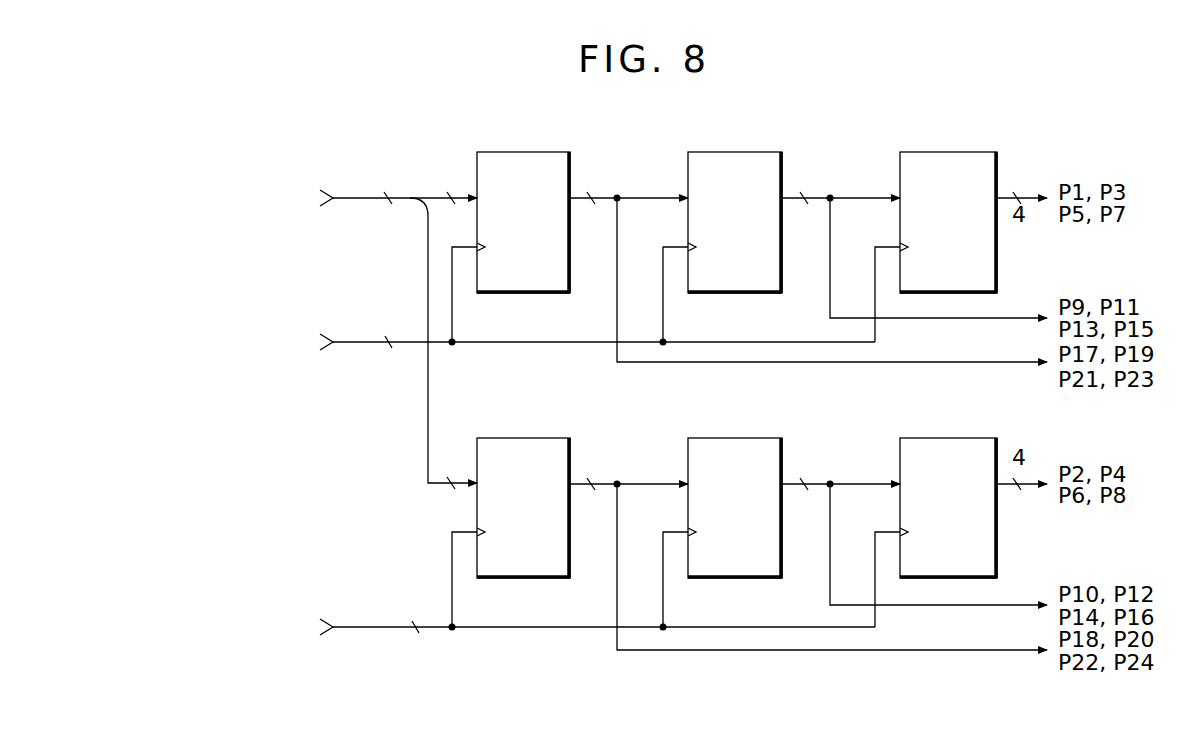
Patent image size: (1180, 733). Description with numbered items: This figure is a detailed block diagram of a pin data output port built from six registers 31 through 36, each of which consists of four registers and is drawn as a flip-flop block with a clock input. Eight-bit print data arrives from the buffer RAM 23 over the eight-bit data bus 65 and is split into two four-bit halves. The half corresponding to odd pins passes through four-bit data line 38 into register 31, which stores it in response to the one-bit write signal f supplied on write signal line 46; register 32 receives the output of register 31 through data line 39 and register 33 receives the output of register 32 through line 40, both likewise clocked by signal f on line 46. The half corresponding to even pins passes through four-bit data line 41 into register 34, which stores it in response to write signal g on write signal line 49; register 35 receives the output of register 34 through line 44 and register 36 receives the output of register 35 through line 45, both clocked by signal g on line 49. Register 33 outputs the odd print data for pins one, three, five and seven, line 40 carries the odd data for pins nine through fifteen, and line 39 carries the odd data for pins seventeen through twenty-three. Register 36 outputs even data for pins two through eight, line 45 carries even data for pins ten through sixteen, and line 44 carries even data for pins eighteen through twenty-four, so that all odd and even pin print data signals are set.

The buffer RAM 23 is at (193, 200).
The register 31 is at (512, 152).
The register 32 is at (727, 152).
The register 33 is at (939, 152).
The register 34 is at (515, 437).
The register 35 is at (730, 437).
The register 36 is at (941, 437).
The 4-bit data line 38 is at (431, 197).
The 4-bit data line 39 is at (598, 197).
The 4-bit data line 40 is at (813, 197).
The 4-bit data line 41 is at (427, 409).
The 4-bit data line 44 is at (597, 483).
The 4-bit data line 45 is at (809, 483).
The write signal line 46 is at (355, 341).
The write signal line 49 is at (383, 626).
The 8-bit data bus 65 is at (356, 197).